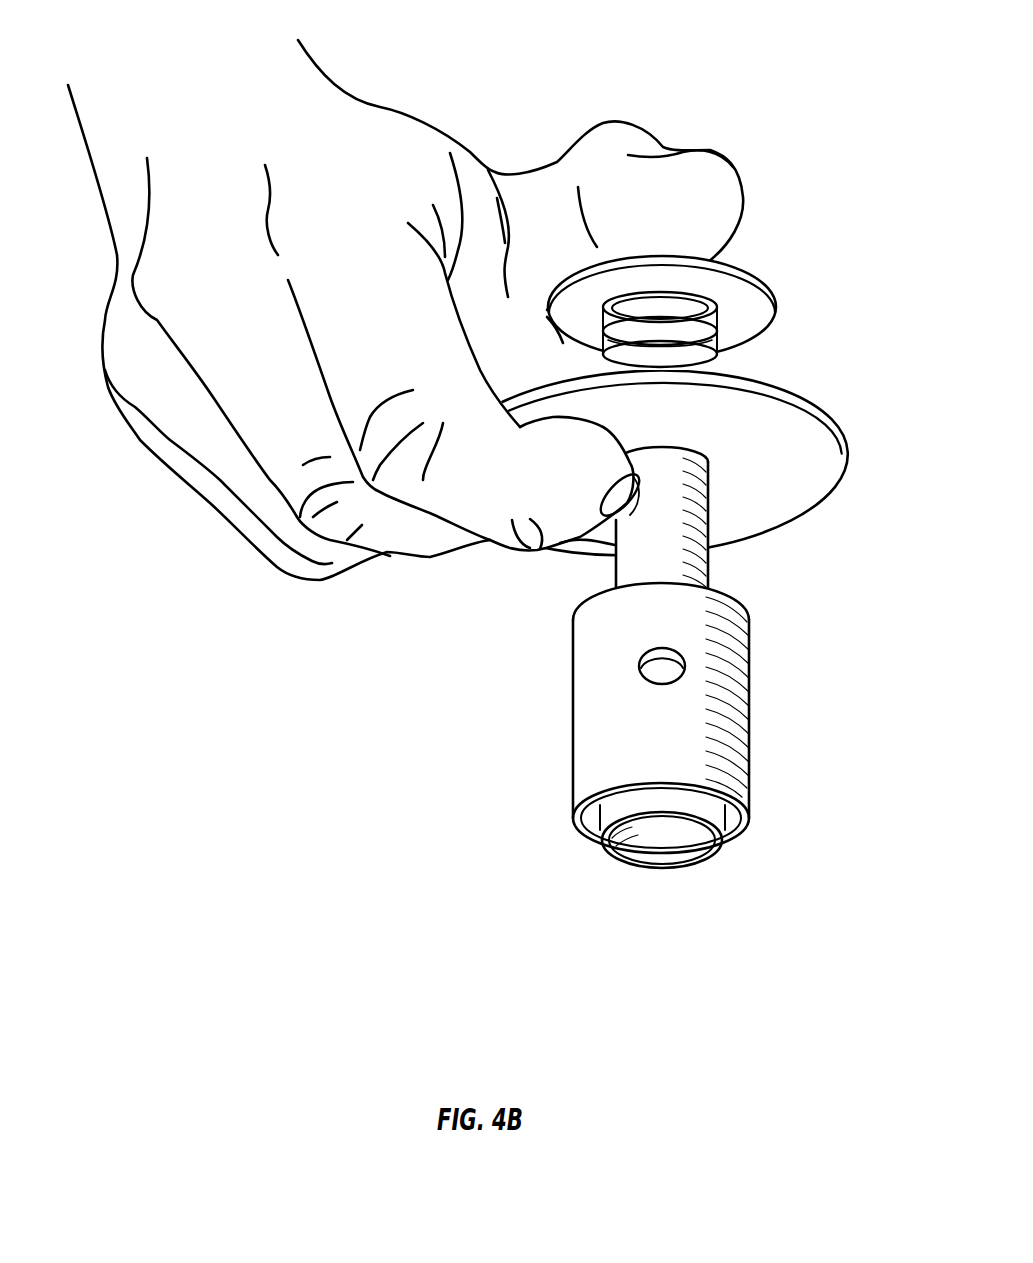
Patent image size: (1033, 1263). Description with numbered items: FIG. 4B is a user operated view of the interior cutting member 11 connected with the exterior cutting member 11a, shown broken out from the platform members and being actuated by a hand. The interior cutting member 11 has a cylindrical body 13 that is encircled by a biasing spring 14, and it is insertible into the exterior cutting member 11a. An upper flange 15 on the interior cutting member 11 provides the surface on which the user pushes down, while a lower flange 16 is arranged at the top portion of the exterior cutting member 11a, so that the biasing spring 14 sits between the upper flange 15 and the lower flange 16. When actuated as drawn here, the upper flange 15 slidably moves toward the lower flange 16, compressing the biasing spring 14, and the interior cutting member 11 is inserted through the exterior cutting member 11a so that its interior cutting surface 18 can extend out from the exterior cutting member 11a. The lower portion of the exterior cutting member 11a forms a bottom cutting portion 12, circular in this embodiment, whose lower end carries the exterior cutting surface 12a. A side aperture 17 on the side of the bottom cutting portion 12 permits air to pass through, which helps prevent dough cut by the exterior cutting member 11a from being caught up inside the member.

The interior cutting member 11 is at (775, 229).
The exterior cutting member 11a is at (820, 608).
The bottom cutting portion 12 is at (573, 655).
The cutting surface 12a is at (750, 826).
The cylindrical body 13 is at (712, 308).
The biasing spring 14 is at (713, 347).
The upper flange 15 is at (760, 282).
The lower flange 16 is at (838, 485).
The side aperture 17 is at (647, 673).
The interior cutting surface 18 is at (658, 870).